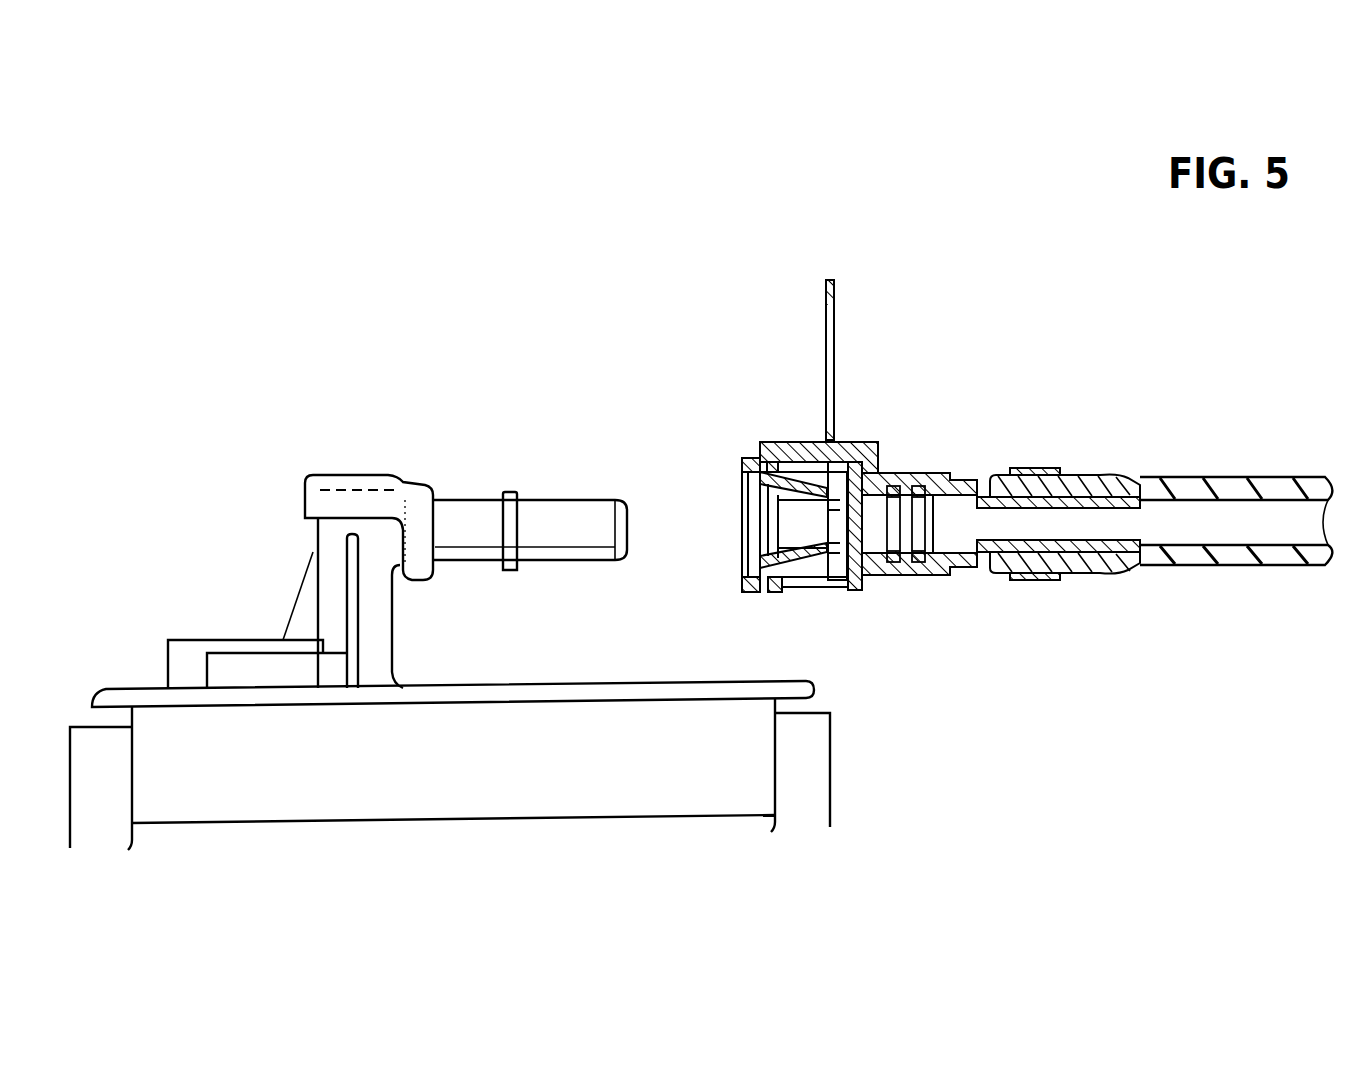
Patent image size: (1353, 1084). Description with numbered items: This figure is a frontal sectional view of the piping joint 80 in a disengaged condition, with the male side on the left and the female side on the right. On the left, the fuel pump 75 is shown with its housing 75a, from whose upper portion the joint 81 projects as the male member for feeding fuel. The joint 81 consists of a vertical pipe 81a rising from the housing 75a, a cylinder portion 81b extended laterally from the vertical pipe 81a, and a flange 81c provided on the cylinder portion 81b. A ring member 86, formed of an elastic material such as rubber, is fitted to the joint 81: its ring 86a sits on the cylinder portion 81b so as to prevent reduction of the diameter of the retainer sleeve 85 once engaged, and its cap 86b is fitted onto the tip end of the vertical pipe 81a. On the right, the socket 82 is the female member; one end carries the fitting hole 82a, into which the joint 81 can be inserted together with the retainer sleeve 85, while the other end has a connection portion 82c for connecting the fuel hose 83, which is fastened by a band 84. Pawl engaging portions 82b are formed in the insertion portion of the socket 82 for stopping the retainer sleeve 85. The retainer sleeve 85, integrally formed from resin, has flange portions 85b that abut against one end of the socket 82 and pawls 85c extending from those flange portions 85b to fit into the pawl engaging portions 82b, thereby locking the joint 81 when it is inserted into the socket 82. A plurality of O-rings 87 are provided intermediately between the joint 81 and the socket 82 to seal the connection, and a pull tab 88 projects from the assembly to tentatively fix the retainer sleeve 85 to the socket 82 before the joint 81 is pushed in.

The piping joint 80 is at (297, 200).
The fuel pump 75 is at (132, 680).
The housing 75a is at (150, 687).
The joint 81 is at (300, 555).
The vertical pipe 81a is at (330, 622).
The cylinder portion 81b is at (565, 500).
The flange 81c is at (505, 497).
The ring member 86 is at (366, 447).
The ring 86a is at (447, 473).
The cap 86b is at (362, 475).
The retainer sleeve 85 is at (749, 484).
The flange portions 85b is at (725, 492).
The pawls 85c is at (790, 445).
The socket 82 is at (990, 490).
The fitting hole 82a is at (953, 575).
The pawl engaging portions 82b is at (840, 445).
The connection portion 82c is at (1081, 480).
The O-rings 87 is at (897, 575).
The band 84 is at (1033, 578).
The fuel hose 83 is at (1228, 478).
The pull tab 88 is at (835, 291).